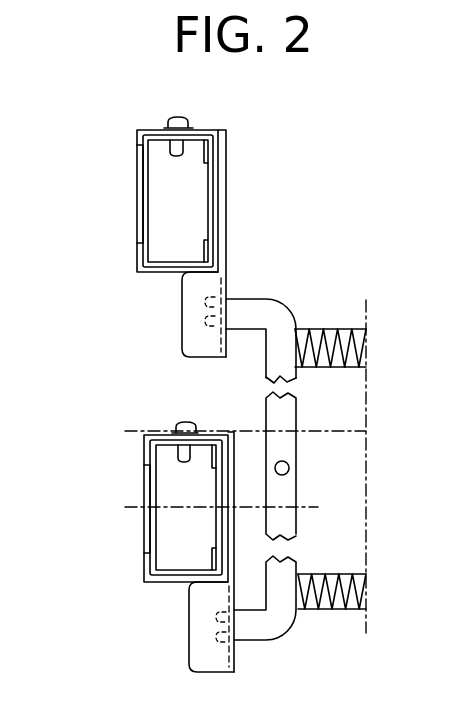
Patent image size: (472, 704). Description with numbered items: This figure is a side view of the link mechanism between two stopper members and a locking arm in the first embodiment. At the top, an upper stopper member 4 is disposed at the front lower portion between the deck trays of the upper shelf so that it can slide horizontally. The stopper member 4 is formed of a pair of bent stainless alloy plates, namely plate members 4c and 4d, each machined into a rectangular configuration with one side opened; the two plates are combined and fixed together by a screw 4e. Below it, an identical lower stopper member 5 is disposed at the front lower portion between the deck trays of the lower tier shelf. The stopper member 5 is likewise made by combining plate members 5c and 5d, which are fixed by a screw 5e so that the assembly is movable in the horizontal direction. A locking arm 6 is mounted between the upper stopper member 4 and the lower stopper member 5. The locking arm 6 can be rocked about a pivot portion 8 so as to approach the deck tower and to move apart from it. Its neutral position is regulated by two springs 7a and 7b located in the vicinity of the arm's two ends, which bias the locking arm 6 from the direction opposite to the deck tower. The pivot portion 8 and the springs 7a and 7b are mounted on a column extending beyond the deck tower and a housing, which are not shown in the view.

The stopper member 4 is at (172, 220).
The plate member 4c is at (216, 129).
The plate member 4d is at (142, 183).
The screw 4e is at (180, 116).
The stopper member 5 is at (189, 501).
The plate member 5c is at (216, 431).
The plate member 5d is at (148, 533).
The screw 5e is at (180, 422).
The locking arm 6 is at (285, 414).
The spring 7a is at (317, 332).
The spring 7b is at (325, 576).
The pivot portion 8 is at (289, 468).